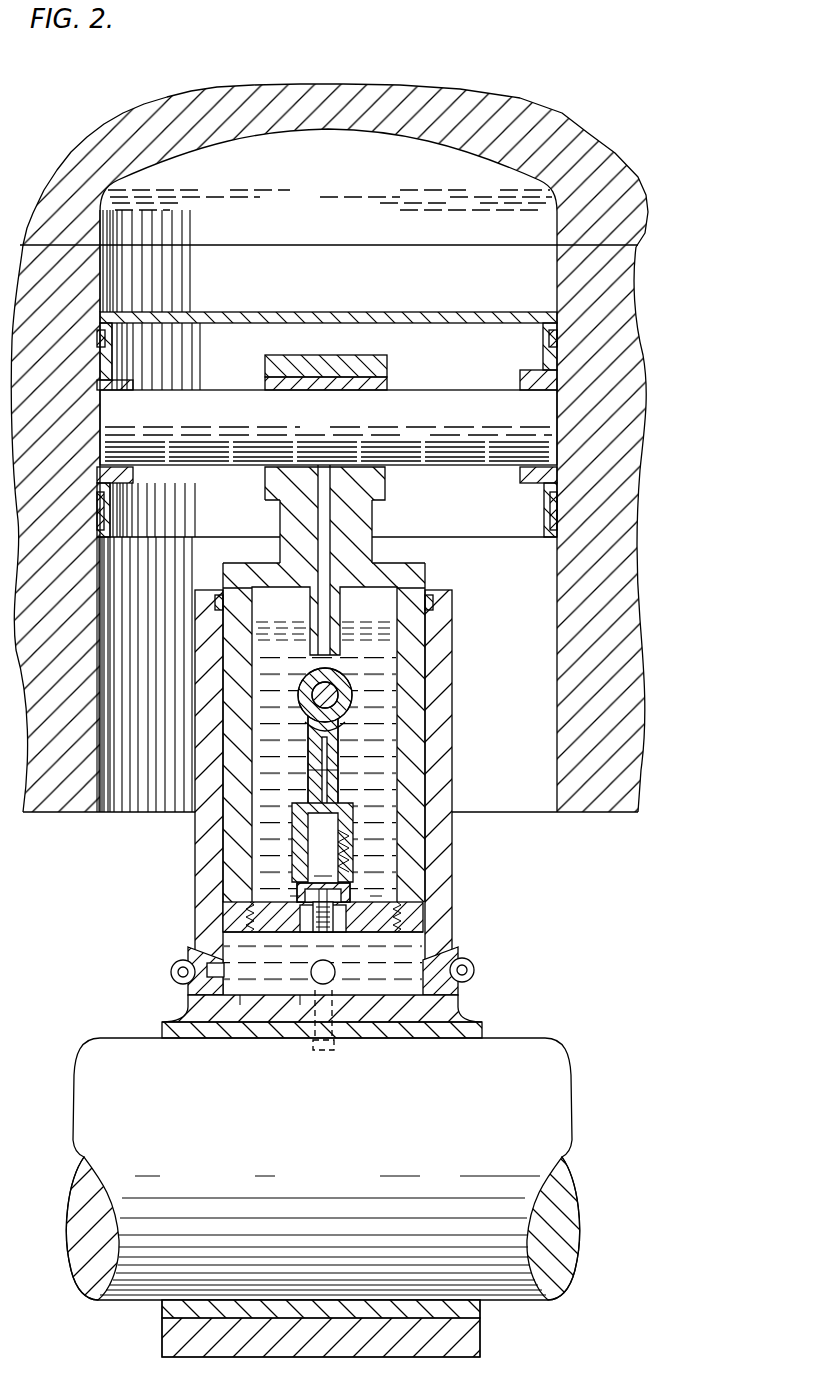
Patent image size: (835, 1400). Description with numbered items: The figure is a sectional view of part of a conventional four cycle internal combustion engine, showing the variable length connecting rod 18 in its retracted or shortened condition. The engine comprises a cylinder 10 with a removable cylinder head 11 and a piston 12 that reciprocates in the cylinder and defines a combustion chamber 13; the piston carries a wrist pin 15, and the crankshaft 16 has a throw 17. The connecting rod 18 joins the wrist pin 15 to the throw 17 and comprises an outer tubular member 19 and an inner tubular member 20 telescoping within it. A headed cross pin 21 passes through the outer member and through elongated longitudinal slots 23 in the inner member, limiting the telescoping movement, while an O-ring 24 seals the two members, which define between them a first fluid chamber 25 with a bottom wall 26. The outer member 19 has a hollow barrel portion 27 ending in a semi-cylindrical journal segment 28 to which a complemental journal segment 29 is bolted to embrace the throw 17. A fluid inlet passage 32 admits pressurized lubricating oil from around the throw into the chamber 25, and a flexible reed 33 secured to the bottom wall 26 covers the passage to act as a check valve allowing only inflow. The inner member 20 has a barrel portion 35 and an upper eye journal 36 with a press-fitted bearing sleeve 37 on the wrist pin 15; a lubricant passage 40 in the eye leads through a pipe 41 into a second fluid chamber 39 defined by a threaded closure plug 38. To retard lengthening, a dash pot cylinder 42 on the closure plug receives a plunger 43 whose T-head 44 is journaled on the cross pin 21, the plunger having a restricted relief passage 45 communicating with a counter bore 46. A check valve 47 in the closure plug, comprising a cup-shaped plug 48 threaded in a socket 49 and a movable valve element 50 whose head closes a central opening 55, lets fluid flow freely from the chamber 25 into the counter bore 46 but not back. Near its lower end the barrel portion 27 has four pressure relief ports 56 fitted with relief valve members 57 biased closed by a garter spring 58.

The cylinder 10 is at (620, 365).
The cylinder head 11 is at (622, 187).
The piston 12 is at (357, 312).
The combustion chamber 13 is at (331, 220).
The wrist pin 15 is at (440, 431).
The crankshaft 16 is at (568, 1220).
The throw 17 is at (330, 1179).
The variable length connecting rod 18 is at (183, 819).
The outer tubular member 19 is at (455, 895).
The inner tubular member 20 is at (433, 578).
The cross pin 21 is at (330, 698).
The longitudinal slots 23 is at (310, 774).
The O-ring 24 is at (434, 604).
The first fluid chamber 25 is at (390, 989).
The bottom wall 26 is at (247, 983).
The barrel portion 27 is at (452, 737).
The journal segment 28 is at (465, 1013).
The journal segment clamp 29 is at (472, 1340).
The fluid inlet passage 32 is at (336, 1012).
The reed 33 is at (303, 980).
The barrel portion 35 is at (230, 662).
The eye journal 36 is at (373, 517).
The bearing sleeve 37 is at (378, 472).
The closure plug 38 is at (386, 920).
The second fluid chamber 39 is at (387, 790).
The lubricant passage 40 is at (323, 510).
The pipe 41 is at (341, 603).
The dash pot cylinder 42 is at (292, 827).
The plunger 43 is at (308, 782).
The T-head 44 is at (312, 682).
The relief passage 45 is at (328, 750).
The counter bore 46 is at (353, 873).
The check valve 47 is at (314, 937).
The plug 48 is at (292, 900).
The socket 49 is at (378, 897).
The movable valve element 50 is at (323, 876).
The central opening 55 is at (345, 907).
The pressure relief ports 56 is at (217, 958).
The pressure relief valve members 57 is at (188, 953).
The garter spring 58 is at (474, 968).